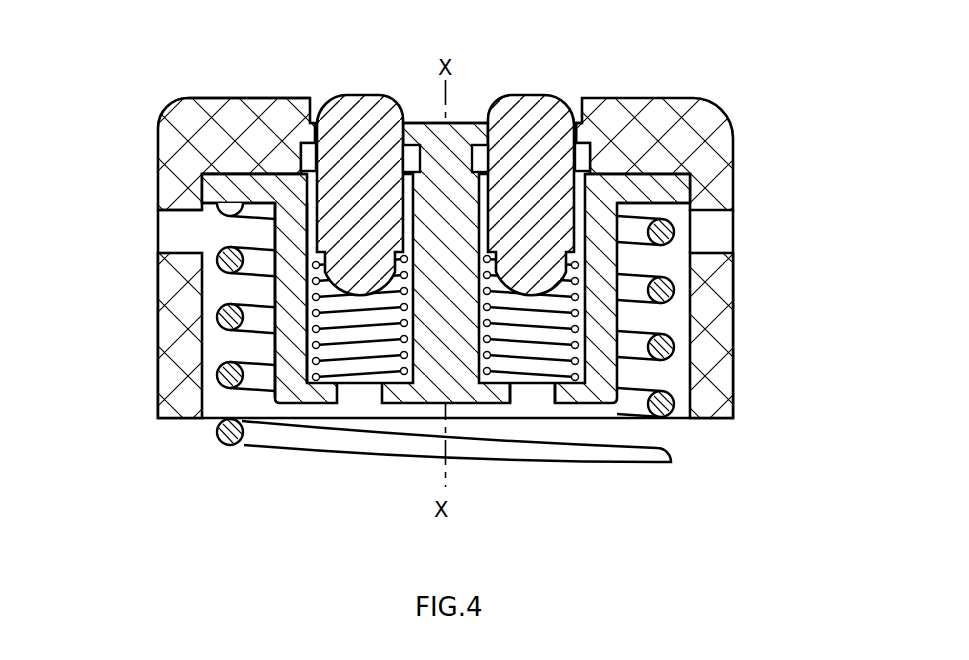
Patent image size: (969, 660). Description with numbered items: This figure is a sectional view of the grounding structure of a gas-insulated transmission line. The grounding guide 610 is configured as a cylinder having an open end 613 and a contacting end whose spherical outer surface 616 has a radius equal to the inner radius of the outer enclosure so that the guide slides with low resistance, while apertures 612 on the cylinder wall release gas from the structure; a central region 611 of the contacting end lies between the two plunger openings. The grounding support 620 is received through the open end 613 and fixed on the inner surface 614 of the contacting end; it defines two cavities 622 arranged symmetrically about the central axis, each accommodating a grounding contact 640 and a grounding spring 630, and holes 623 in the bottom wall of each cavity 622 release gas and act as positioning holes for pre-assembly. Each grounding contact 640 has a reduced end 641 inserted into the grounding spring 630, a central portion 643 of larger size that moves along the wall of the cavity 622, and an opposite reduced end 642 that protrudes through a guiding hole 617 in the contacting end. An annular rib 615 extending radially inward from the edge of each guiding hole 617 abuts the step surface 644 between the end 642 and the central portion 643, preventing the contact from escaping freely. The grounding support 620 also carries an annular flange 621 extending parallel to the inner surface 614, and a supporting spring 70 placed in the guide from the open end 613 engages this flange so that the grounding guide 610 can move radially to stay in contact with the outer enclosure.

The supporting spring 70 is at (287, 438).
The grounding guide 610 is at (187, 130).
The central recess of housing 611 is at (465, 112).
The aperture 612 is at (710, 232).
The open end 613 is at (210, 393).
The inner surface 614 is at (235, 174).
The annular rib 615 is at (588, 131).
The spherical outer surface 616 is at (237, 98).
The guiding hole 617 is at (593, 150).
The grounding support 620 is at (610, 358).
The annular flange 621 is at (227, 187).
The cavity 622 is at (295, 302).
The hole 623 is at (523, 393).
The grounding spring 630 is at (595, 310).
The grounding contact 640 is at (530, 157).
The end 641 is at (358, 277).
The end 642 is at (357, 110).
The central portion 643 is at (300, 205).
The step surface 644 is at (600, 185).